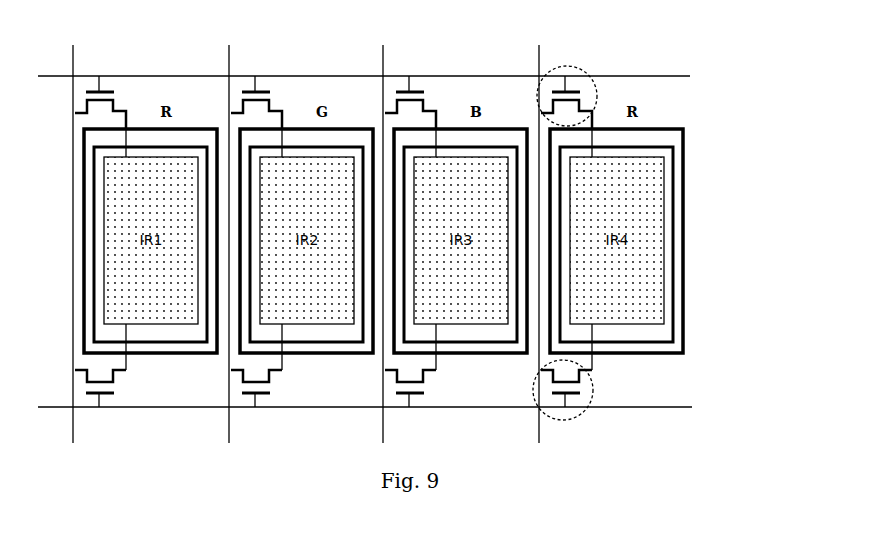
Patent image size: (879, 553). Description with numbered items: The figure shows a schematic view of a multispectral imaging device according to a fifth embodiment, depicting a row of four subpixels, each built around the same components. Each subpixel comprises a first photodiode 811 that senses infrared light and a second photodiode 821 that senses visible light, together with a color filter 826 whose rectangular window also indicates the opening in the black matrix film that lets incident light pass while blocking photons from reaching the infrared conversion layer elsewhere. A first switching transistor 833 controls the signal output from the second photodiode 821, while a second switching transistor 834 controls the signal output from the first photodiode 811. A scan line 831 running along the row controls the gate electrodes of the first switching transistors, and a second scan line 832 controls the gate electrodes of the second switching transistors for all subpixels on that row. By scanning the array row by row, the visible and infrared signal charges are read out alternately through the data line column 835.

The first photodiode 811 is at (664, 303).
The second photodiode 821 is at (673, 225).
The color filter 826 is at (683, 147).
The scan line 831 is at (690, 76).
The scan line 832 is at (692, 407).
The first switching transistor 833 is at (596, 97).
The second switching transistor 834 is at (595, 385).
The data line column 835 is at (541, 58).